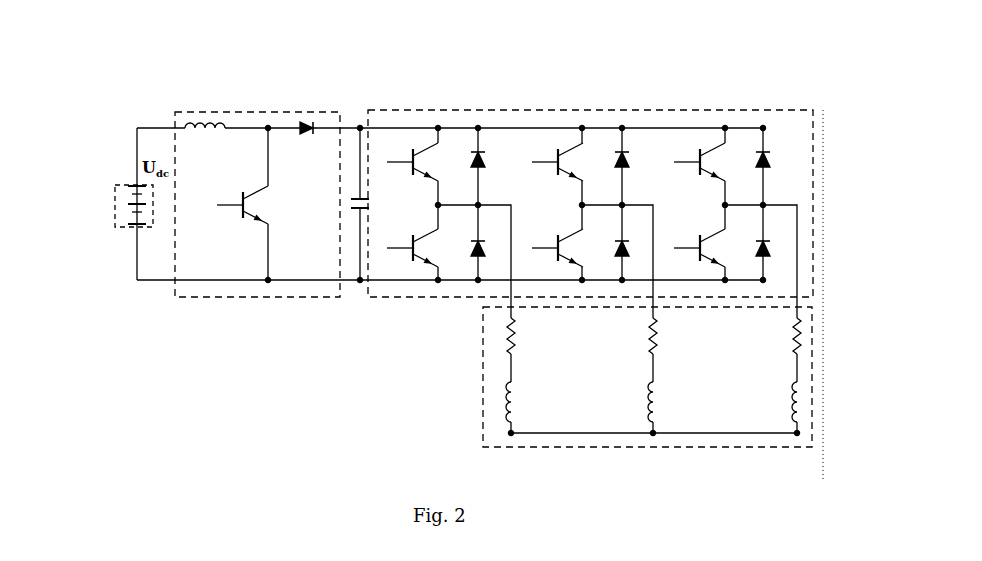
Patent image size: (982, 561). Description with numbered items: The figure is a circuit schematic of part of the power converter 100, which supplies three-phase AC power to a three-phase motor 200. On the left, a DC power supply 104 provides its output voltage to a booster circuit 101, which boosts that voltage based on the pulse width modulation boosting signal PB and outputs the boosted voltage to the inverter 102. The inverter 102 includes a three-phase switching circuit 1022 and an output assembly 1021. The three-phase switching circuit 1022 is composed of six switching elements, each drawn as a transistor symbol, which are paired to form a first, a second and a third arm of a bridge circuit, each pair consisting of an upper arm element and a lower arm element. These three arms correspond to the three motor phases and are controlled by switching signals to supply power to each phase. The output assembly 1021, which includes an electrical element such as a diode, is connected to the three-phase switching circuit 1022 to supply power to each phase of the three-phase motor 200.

The power converter 100 is at (172, 74).
The booster circuit 101 is at (215, 108).
The inverter 102 is at (582, 203).
The output assembly 1021 is at (495, 292).
The three-phase switching circuit 1022 is at (497, 140).
The DC power supply 104 is at (112, 208).
The three-phase motor 200 is at (470, 385).